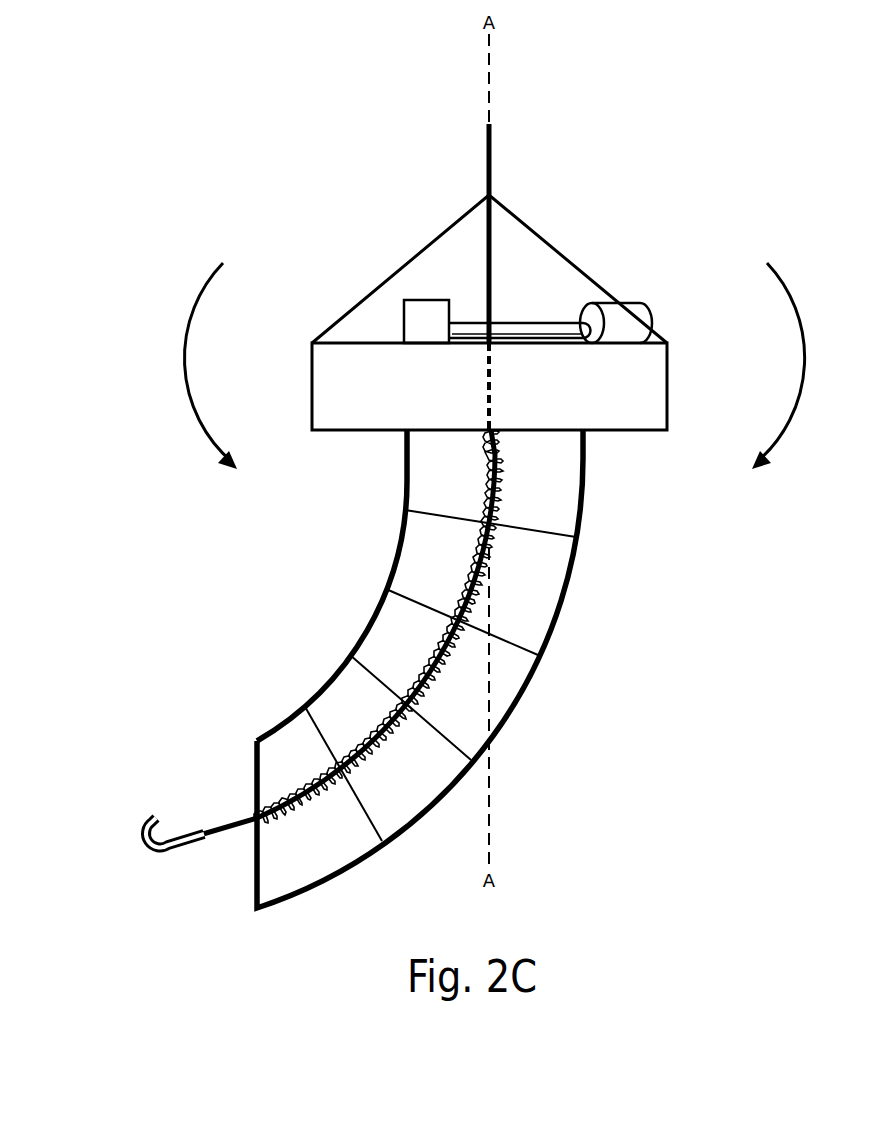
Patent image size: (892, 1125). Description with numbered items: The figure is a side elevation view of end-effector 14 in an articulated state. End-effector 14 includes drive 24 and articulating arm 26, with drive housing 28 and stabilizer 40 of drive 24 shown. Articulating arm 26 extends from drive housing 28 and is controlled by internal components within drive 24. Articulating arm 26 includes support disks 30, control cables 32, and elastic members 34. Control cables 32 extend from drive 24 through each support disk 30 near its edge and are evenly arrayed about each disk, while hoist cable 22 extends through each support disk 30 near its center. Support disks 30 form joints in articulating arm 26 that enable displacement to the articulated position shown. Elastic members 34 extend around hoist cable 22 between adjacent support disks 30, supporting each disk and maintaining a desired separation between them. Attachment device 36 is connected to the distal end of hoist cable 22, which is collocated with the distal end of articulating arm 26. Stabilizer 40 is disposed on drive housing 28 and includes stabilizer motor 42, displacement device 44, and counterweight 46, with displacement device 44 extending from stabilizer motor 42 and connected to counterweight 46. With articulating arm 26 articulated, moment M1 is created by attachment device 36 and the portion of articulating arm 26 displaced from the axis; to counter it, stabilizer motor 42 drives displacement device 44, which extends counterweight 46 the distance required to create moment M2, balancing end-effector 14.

The end-effector 14 is at (632, 516).
The hoist cable 22 is at (500, 467).
The drive 24 is at (488, 386).
The articulating arm 26 is at (373, 604).
The drive housing 28 is at (627, 380).
The support disks 30 is at (455, 675).
The control cables 32 is at (328, 677).
The elastic members 34 is at (443, 663).
The attachment device 36 is at (147, 842).
The stabilizer 40 is at (522, 253).
The stabilizer motor 42 is at (423, 318).
The displacement device 44 is at (527, 330).
The counterweight 46 is at (641, 310).
The moment M1 is at (183, 350).
The moment M2 is at (806, 350).